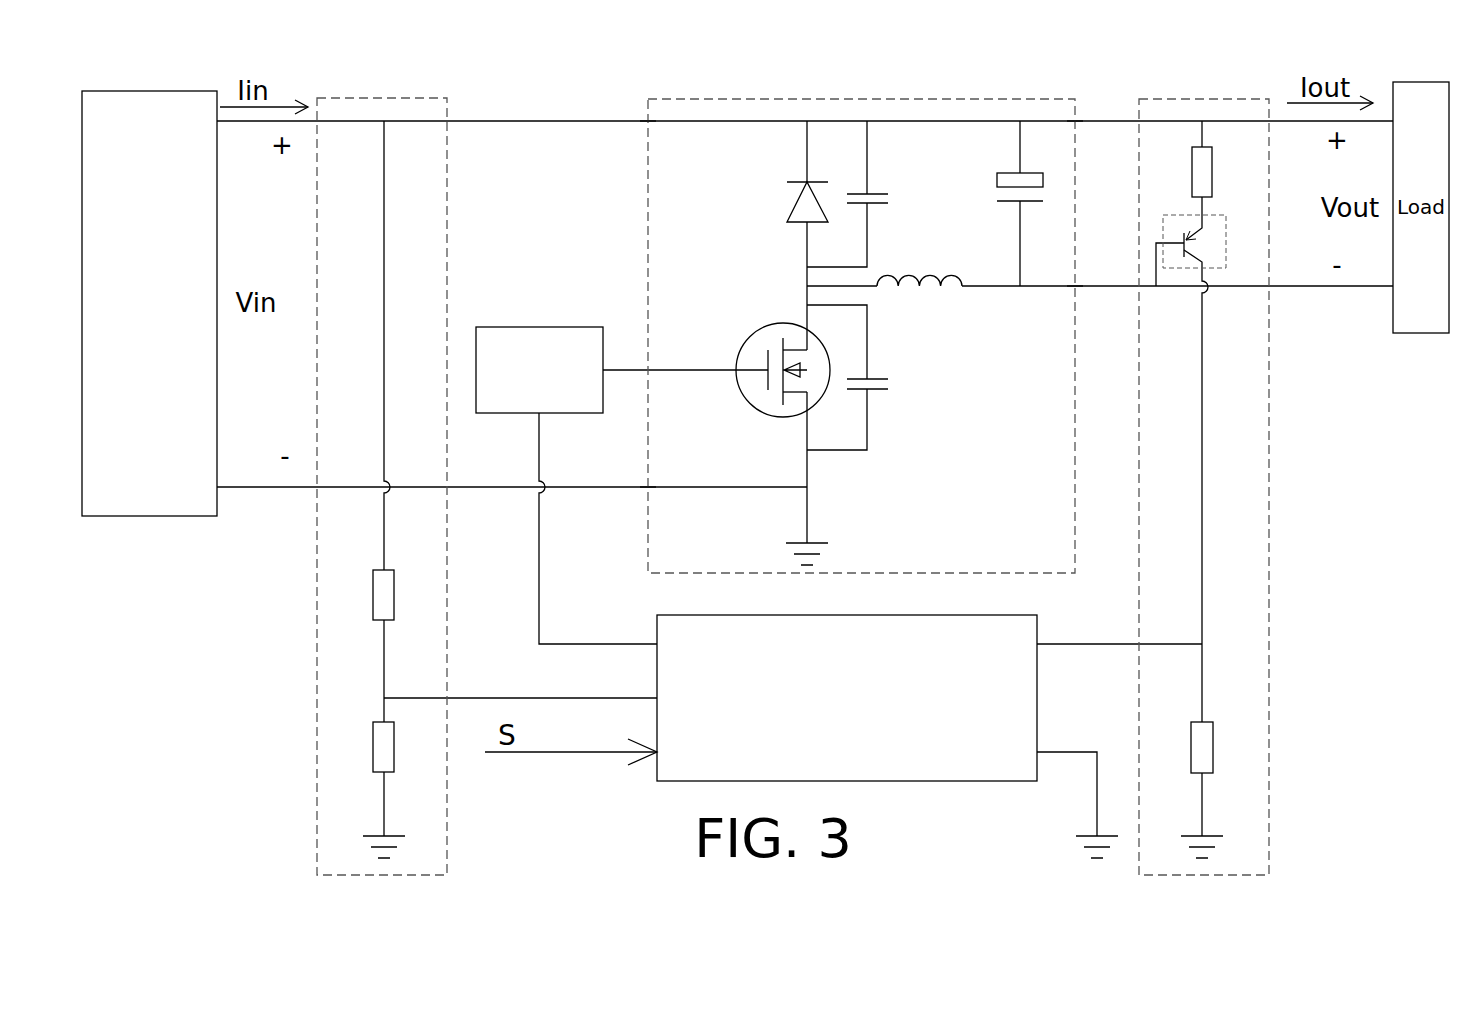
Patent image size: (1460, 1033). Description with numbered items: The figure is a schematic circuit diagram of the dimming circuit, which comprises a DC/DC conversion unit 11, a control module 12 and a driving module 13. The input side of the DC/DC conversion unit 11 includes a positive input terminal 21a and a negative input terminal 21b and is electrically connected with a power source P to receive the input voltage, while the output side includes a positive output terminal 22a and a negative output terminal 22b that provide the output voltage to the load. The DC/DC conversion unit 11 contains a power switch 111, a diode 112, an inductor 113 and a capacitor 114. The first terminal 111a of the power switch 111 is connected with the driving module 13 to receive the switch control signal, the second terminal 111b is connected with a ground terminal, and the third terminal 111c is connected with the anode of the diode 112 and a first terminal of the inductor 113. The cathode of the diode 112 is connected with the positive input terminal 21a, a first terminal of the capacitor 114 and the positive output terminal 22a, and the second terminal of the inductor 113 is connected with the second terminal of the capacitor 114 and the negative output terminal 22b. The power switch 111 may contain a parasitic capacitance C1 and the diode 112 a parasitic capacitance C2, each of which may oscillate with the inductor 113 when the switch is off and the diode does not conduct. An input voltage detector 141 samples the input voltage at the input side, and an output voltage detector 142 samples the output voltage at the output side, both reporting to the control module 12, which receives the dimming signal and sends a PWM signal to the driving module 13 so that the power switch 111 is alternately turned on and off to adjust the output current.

The power source P is at (155, 90).
The DC/DC conversion unit 11 is at (882, 99).
The control module 12 is at (1037, 691).
The driving module 13 is at (537, 327).
The power switch 111 is at (738, 421).
The first terminal 111a is at (737, 367).
The second terminal 111b is at (724, 385).
The third terminal 111c is at (806, 328).
The diode 112 is at (772, 196).
The inductor 113 is at (930, 298).
The capacitor 114 is at (990, 168).
The input voltage detector 141 is at (447, 591).
The output voltage detector 142 is at (1269, 478).
The positive input terminal 21a is at (648, 121).
The negative input terminal 21b is at (645, 487).
The positive output terminal 22a is at (1078, 122).
The negative output terminal 22b is at (1078, 288).
The parasitic capacitance C1 is at (870, 377).
The parasitic capacitance C2 is at (870, 194).